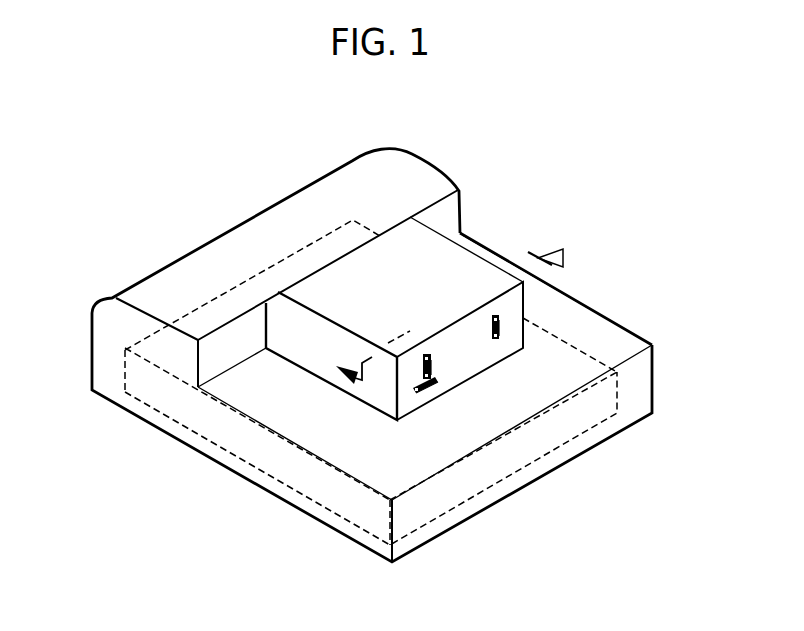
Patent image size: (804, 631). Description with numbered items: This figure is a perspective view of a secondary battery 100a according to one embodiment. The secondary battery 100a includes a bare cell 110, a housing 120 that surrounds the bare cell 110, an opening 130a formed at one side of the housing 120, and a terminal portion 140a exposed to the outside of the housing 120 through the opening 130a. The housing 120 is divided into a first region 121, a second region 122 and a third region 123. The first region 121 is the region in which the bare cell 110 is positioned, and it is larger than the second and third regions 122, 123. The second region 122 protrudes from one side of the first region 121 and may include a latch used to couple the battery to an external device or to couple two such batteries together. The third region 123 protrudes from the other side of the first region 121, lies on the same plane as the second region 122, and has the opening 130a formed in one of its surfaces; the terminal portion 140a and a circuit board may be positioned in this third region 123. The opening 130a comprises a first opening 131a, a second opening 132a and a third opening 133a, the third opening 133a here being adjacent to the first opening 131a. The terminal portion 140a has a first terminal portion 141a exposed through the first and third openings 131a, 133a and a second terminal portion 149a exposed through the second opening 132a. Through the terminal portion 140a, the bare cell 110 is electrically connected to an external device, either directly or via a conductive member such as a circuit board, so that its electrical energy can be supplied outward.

The secondary battery 100a is at (98, 134).
The bare cell 110 is at (283, 473).
The housing 120 is at (104, 404).
The first region 121 is at (197, 440).
The second region 122 is at (237, 257).
The third region 123 is at (483, 271).
The opening 130a is at (653, 489).
The first opening 131a is at (447, 368).
The second opening 132a is at (508, 352).
The third opening 133a is at (441, 390).
The terminal portion 140a is at (450, 236).
The first terminal portion 141a is at (417, 387).
The second terminal portion 149a is at (486, 337).